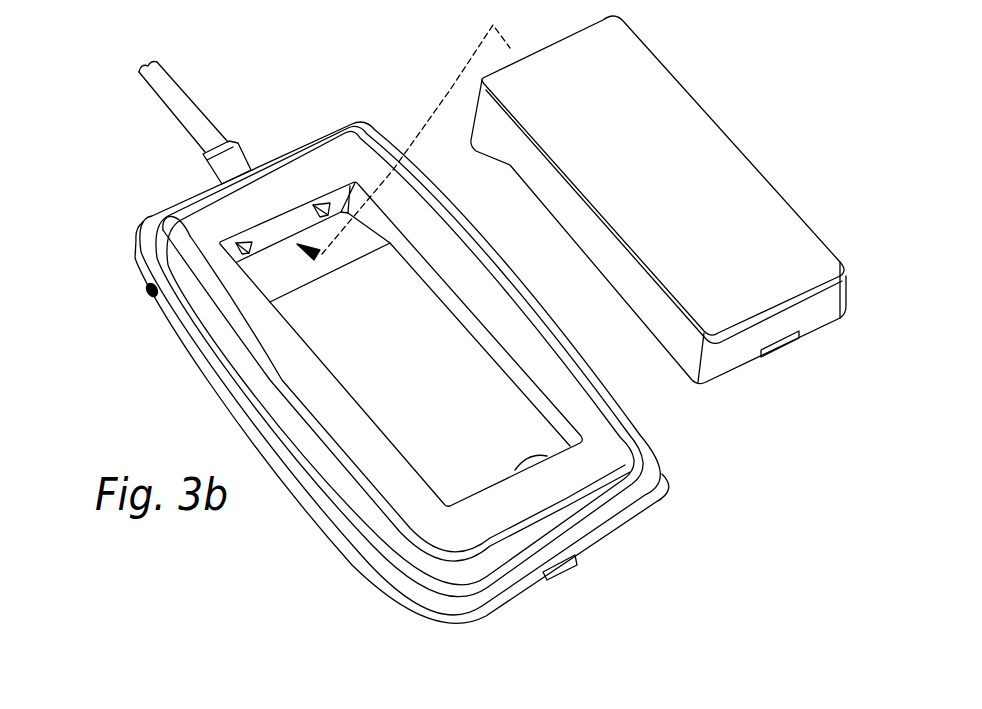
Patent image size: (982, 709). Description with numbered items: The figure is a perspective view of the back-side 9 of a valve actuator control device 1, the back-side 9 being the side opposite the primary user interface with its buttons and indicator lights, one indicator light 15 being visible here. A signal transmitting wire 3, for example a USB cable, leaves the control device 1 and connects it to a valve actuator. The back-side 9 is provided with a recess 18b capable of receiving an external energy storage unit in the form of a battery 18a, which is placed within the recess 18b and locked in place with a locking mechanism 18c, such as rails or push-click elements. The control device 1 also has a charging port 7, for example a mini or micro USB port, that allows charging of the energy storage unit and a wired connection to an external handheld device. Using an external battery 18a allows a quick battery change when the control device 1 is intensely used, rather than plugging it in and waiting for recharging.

The valve actuator control device 1 is at (146, 174).
The signal transmitting wire 3 is at (200, 89).
The charging port 7 is at (561, 579).
The back-side 9 is at (144, 220).
The indicator light 15 is at (146, 293).
The battery 18a is at (634, 82).
The recess 18b is at (367, 330).
The locking mechanism 18c is at (547, 456).